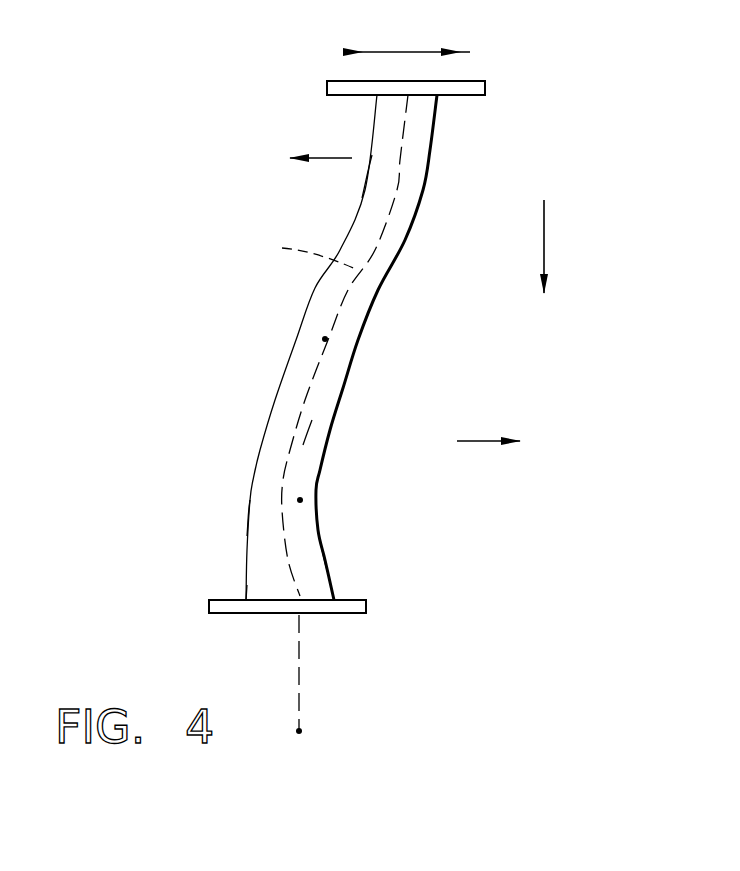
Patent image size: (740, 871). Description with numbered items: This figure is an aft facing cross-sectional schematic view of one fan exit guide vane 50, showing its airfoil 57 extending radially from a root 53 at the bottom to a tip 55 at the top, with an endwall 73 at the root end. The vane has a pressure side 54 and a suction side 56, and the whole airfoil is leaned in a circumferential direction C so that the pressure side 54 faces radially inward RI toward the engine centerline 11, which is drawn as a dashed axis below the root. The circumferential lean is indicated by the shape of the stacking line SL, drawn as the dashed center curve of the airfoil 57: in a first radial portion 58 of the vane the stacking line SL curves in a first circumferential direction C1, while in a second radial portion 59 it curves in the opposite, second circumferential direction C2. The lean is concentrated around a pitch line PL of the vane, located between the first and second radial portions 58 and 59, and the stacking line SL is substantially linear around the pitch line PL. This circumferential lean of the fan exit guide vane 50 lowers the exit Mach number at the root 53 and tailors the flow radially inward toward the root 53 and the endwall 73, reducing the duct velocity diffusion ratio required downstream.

The fan exit guide vane 50 is at (347, 388).
The pitch line PL is at (326, 339).
The tip 55 is at (437, 97).
The endwall 73 is at (352, 598).
The second radial portion 59 is at (372, 193).
The stacking line SL is at (302, 253).
The first radial portion 58 is at (305, 433).
The airfoil 57 is at (303, 500).
The suction side 56 is at (248, 513).
The pressure side 54 is at (322, 548).
The root 53 is at (245, 598).
The centerline 11 is at (305, 728).
The circumferential direction C is at (415, 52).
The first circumferential direction C1 is at (478, 441).
The second circumferential direction C2 is at (328, 158).
The radially inward direction RI is at (544, 240).